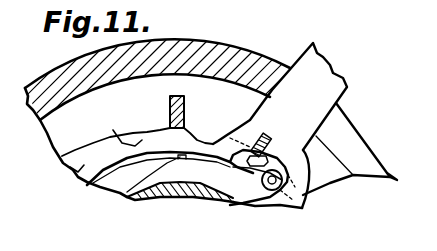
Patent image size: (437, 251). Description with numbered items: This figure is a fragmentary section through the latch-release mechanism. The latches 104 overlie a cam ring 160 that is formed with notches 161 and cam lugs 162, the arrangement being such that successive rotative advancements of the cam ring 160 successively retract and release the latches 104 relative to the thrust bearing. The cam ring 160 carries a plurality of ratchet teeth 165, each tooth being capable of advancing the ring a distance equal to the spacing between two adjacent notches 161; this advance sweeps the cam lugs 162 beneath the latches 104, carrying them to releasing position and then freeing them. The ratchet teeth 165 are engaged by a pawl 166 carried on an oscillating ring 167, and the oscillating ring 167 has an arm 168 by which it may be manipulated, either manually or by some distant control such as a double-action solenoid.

The latch 104 is at (186, 97).
The cam ring 160 is at (138, 173).
The notch 161 is at (138, 133).
The cam lug 162 is at (182, 133).
The ratchet tooth 165 is at (130, 193).
The pawl 166 is at (303, 150).
The oscillating ring 167 is at (78, 162).
The arm 168 is at (328, 82).